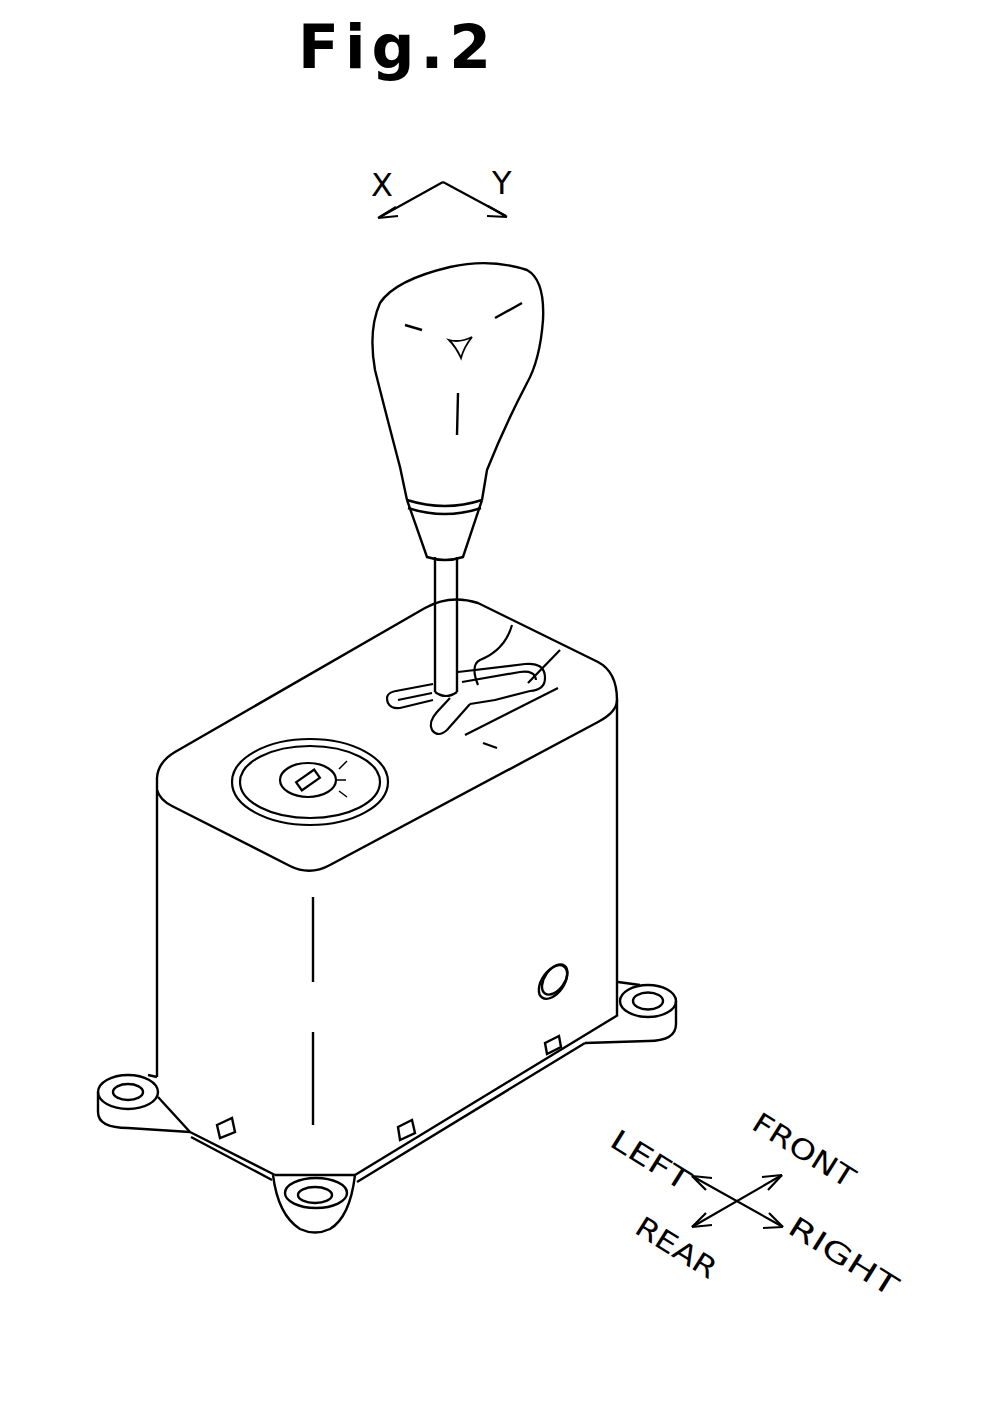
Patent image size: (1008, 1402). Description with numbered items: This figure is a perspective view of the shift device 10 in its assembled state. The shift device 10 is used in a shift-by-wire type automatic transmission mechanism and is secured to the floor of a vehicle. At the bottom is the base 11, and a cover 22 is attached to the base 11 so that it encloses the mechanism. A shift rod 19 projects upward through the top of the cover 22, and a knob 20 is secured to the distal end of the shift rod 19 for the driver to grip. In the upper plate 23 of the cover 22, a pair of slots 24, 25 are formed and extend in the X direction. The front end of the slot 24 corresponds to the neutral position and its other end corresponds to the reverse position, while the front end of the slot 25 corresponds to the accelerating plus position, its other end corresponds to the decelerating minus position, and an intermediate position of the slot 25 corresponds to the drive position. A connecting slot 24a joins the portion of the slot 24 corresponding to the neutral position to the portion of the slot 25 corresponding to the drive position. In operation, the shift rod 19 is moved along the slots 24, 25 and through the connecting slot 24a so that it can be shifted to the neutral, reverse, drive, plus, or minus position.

The shift device 10 is at (338, 423).
The base 11 is at (518, 1087).
The shift rod 19 is at (435, 575).
The knob 20 is at (512, 385).
The cover 22 is at (590, 833).
The upper plate 23 is at (268, 712).
The slot 24 is at (430, 690).
The connecting slot 24a is at (512, 625).
The slot 25 is at (560, 650).